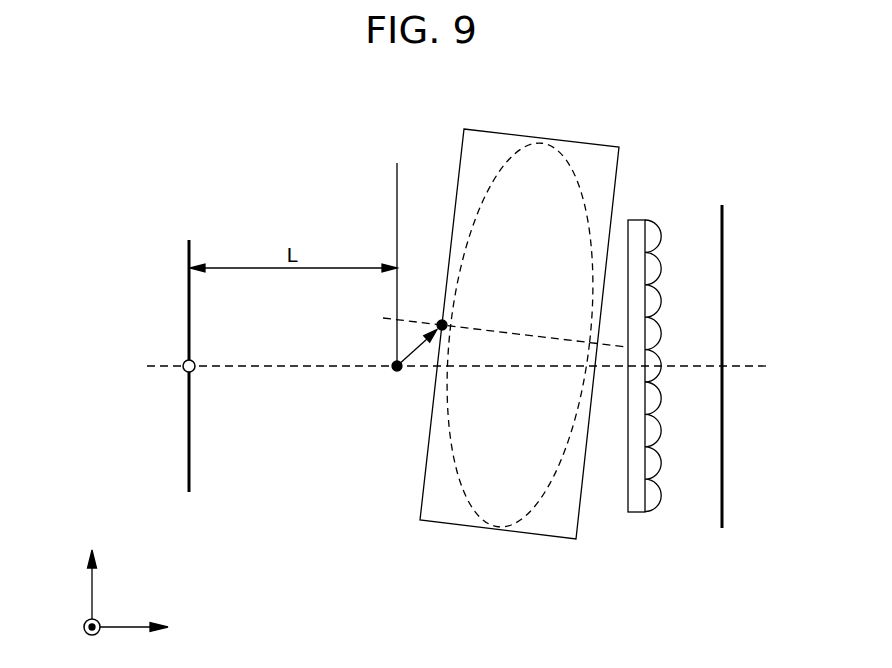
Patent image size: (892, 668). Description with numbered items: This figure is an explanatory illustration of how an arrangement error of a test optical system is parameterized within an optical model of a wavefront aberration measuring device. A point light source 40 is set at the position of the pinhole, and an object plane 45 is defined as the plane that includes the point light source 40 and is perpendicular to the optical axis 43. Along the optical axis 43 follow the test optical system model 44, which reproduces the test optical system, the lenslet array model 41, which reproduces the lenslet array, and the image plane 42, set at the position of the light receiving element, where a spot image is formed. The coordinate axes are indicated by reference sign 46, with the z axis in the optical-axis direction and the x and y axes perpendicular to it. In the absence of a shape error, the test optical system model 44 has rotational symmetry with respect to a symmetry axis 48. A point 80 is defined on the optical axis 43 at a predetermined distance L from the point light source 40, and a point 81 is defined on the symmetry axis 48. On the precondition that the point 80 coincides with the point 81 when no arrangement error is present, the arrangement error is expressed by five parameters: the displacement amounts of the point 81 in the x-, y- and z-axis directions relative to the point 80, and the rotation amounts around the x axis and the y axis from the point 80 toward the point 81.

The point light source 40 is at (184, 371).
The lenslet array model 41 is at (638, 226).
The image plane 42 is at (724, 233).
The optical axis 43 is at (258, 372).
The test optical system model 44 is at (488, 141).
The object plane 45 is at (192, 253).
The coordinate axes 46 is at (138, 572).
The symmetry axis 48 is at (512, 331).
The point 80 is at (397, 372).
The point 81 is at (440, 320).